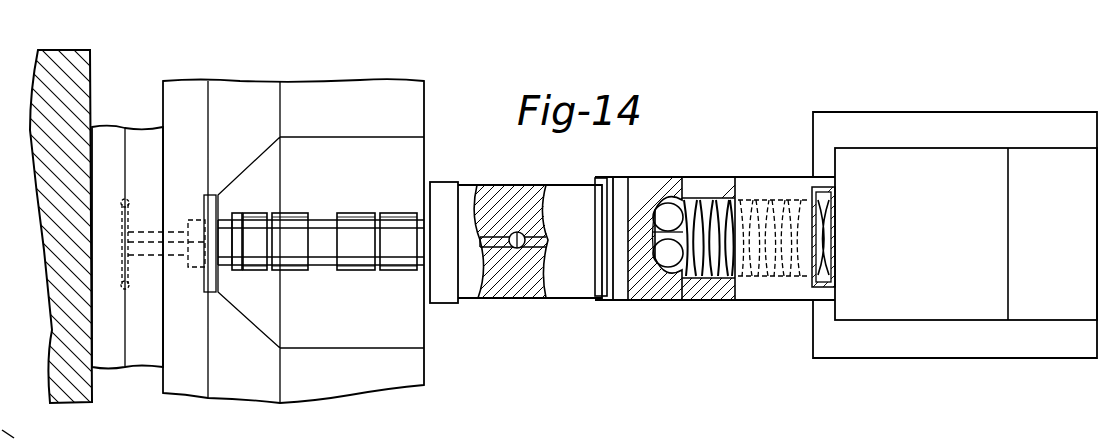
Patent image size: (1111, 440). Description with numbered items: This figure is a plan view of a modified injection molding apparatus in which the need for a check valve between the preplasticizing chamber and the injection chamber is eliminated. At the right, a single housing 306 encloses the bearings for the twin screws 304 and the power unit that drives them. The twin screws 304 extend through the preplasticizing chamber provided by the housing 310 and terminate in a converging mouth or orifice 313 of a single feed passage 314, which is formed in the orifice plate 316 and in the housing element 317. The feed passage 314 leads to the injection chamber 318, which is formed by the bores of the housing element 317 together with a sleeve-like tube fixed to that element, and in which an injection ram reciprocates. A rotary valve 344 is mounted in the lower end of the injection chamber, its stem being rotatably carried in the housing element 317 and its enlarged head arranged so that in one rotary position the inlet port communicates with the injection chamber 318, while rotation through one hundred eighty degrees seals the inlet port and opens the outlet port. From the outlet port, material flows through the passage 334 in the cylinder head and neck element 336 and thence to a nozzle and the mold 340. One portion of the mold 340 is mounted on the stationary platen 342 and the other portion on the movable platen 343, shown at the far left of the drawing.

The movable platen 343 is at (78, 72).
The mold 340 is at (108, 135).
The stationary platen 342 is at (353, 93).
The cylinder head and neck element 336 is at (325, 220).
The rotary valve 344 is at (517, 233).
The passage 334 is at (483, 240).
The injection chamber 318 is at (525, 232).
The housing element 317 is at (577, 290).
The feed passage 314 is at (628, 238).
The orifice plate 316 is at (650, 300).
The converging mouth or orifice 313 is at (670, 203).
The twin screws 304 is at (723, 207).
The housing 310 is at (762, 163).
The housing 306 is at (952, 162).